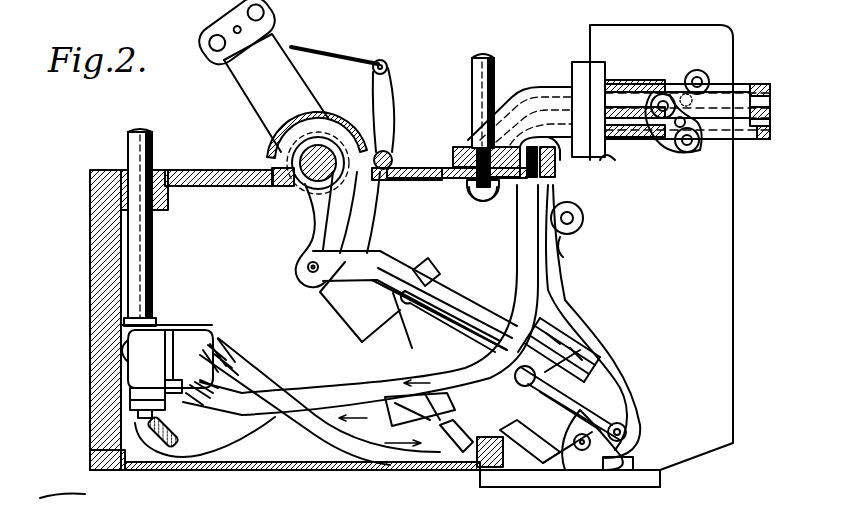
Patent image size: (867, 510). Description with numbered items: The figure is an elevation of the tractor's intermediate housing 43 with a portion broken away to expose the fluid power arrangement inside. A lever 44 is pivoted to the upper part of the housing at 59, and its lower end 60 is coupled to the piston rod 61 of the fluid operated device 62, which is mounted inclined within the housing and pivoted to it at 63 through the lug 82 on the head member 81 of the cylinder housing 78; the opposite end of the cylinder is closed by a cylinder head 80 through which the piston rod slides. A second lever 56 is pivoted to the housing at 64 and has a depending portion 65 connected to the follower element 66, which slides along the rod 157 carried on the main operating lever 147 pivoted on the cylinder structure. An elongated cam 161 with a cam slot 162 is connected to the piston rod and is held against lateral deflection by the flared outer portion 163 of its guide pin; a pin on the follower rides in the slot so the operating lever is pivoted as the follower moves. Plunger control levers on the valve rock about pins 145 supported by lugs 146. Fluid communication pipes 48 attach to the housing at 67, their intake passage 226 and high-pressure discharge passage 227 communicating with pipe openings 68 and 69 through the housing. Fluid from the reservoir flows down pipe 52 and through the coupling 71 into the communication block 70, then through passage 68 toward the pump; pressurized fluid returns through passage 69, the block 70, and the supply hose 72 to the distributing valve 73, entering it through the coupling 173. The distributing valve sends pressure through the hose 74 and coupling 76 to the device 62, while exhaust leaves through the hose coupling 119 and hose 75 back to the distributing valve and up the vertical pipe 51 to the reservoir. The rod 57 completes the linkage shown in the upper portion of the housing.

The intermediate housing 43 is at (193, 170).
The lever 44 is at (262, 77).
The fluid communication pipes 48 is at (718, 160).
The vertical pipe 51 is at (130, 146).
The pipe 52 is at (478, 66).
The lever 56 is at (392, 95).
The rod 57 is at (322, 52).
The pivot of lever 59 is at (298, 176).
The lower end of lever 60 is at (322, 231).
The piston rod 61 is at (325, 284).
The fluid operated device 62 is at (382, 359).
The pivot of fluid operated device 63 is at (630, 452).
The pivot of lever 64 is at (387, 154).
The depending portion 65 is at (383, 216).
The follower element 66 is at (545, 320).
The pipe connection 67 is at (686, 80).
The pipe opening 68 is at (613, 95).
The pipe opening 69 is at (618, 140).
The communication block 70 is at (546, 86).
The coupling 71 is at (482, 200).
The supply hose 72 is at (520, 257).
The distributing valve 73 is at (187, 318).
The hose 74 is at (245, 410).
The hose 75 is at (240, 366).
The coupling 76 is at (462, 452).
The cylinder housing 78 is at (382, 336).
The cylinder head 80 is at (418, 268).
The head member 81 is at (596, 388).
The lug 82 is at (567, 456).
The hose coupling 119 is at (405, 415).
The pin 145 is at (382, 486).
The lug 146 is at (212, 486).
The main operating lever 147 is at (585, 344).
The rod 157 is at (572, 330).
The elongated cam 161 is at (615, 412).
The cam slot 162 is at (630, 428).
The flared outer portion 163 is at (598, 364).
The coupling 173 is at (138, 432).
The intake passage 226 is at (785, 72).
The high-pressure discharge passage 227 is at (775, 123).